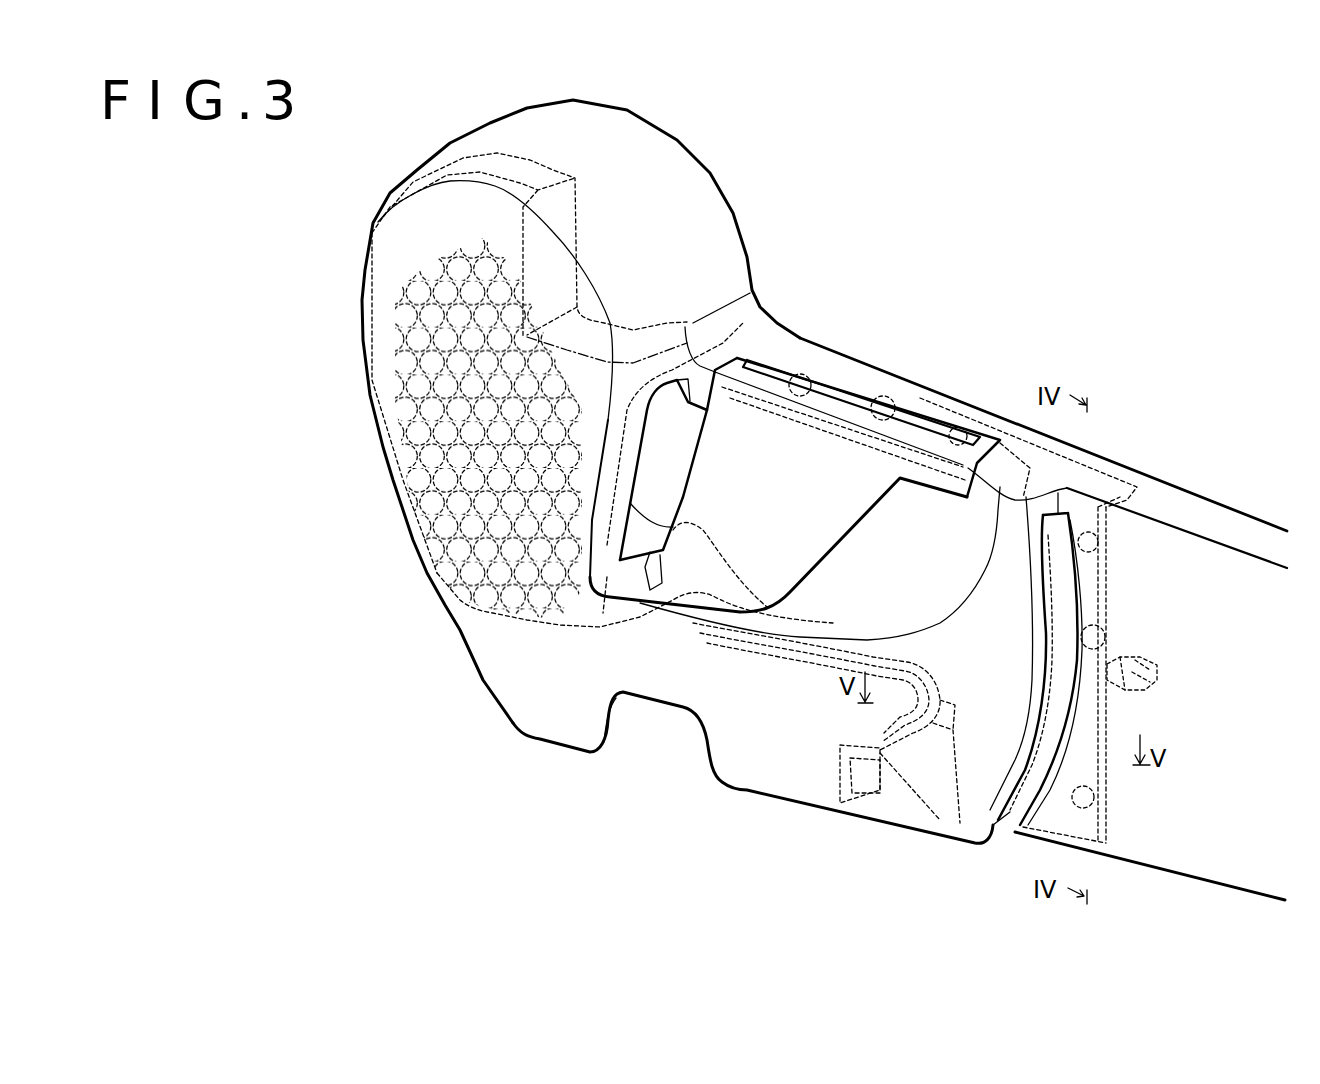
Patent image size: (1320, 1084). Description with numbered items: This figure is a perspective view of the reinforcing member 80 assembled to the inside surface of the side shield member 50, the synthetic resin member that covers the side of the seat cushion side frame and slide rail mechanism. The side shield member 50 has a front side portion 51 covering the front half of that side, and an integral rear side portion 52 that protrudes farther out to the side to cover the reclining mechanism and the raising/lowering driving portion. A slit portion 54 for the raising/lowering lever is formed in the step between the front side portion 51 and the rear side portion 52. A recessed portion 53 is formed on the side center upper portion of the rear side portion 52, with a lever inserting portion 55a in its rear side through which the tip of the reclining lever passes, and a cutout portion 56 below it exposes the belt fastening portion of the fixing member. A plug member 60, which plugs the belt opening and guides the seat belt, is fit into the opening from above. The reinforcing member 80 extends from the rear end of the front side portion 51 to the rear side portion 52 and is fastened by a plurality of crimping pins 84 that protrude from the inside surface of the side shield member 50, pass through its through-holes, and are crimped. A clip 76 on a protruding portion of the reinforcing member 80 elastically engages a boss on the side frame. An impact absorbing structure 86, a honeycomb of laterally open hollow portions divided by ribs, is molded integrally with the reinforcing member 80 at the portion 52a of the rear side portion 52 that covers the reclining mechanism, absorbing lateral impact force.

The side shield member 50 is at (418, 586).
The front side portion 51 is at (1195, 850).
The rear side portion 52 is at (540, 722).
The portion covering the reclining mechanism 52a is at (440, 330).
The recessed portion 53 is at (833, 588).
The slit portion 54 is at (1010, 807).
The lever inserting portion 55a is at (638, 440).
The cutout portion 56 is at (621, 718).
The plug member 60 is at (856, 372).
The clip 76 is at (1163, 672).
The reinforcing member 80 is at (520, 620).
The crimping pins 84 is at (800, 372).
The impact absorbing structure 86 is at (383, 449).